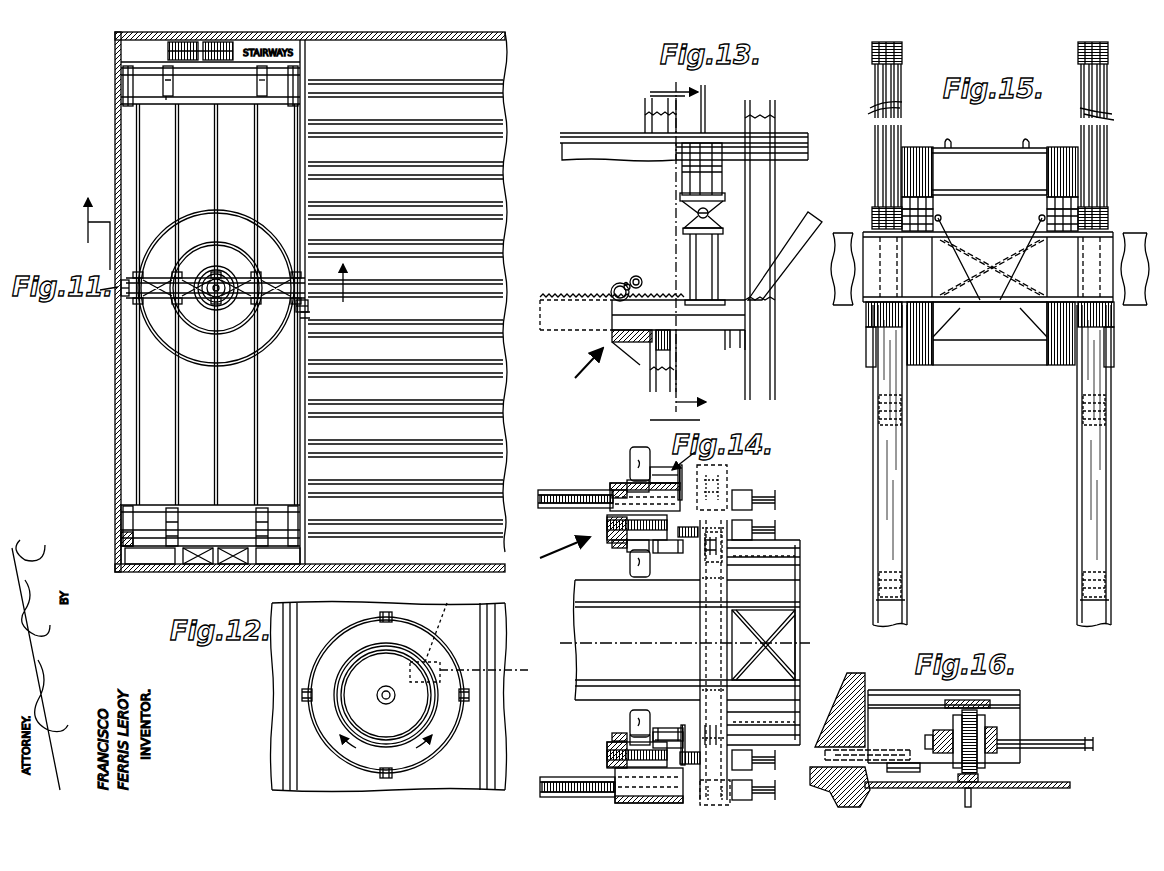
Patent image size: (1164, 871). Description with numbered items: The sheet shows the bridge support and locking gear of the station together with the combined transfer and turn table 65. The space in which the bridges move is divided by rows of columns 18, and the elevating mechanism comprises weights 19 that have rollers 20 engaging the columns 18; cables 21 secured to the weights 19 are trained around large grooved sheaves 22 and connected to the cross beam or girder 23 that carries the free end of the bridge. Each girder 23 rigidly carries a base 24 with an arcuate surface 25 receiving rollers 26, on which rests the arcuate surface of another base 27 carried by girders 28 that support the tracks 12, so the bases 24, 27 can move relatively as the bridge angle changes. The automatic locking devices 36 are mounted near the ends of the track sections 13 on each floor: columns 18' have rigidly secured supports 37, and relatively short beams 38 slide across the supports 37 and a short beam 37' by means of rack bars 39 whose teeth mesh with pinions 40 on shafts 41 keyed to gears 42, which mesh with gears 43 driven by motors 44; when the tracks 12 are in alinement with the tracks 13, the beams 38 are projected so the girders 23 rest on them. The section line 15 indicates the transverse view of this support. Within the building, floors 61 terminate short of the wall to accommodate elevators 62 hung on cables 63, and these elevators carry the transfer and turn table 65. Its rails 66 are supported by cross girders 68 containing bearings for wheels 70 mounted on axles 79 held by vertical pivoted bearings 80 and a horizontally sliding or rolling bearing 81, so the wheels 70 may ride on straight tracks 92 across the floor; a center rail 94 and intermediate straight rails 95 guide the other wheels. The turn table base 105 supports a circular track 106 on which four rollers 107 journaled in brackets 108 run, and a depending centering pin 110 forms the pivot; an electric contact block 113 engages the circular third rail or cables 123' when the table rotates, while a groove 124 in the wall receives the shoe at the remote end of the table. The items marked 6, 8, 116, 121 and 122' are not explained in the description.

In FIG. 11, the elevator shaft enclosure 6 is at (140, 521).
In FIG. 13, the column 8 is at (785, 165).
In FIG. 14, the column 8 is at (778, 562).
In FIG. 15, the column 8 is at (920, 147).
In FIG. 13, the tracks 12 is at (775, 138).
In FIG. 14, the tracks 12 is at (691, 642).
In FIG. 15, the tracks 12 is at (1025, 142).
In FIG. 11, the tracks 13 is at (470, 360).
In FIG. 13, the section line 15 is at (678, 248).
In FIG. 11, the columns 18 is at (216, 258).
In FIG. 14, the columns 18 is at (668, 727).
In FIG. 15, the columns 18 is at (992, 613).
In FIG. 13, the columns 18' is at (712, 247).
In FIG. 14, the columns 18' is at (668, 555).
In FIG. 15, the weights 19 is at (903, 507).
In FIG. 15, the rollers 20 is at (902, 413).
In FIG. 13, the cables 21 is at (706, 116).
In FIG. 14, the cables 21 is at (705, 548).
In FIG. 15, the cables 21 is at (880, 118).
In FIG. 15, the grooved sheaves 22 is at (874, 60).
In FIG. 13, the cross beam or girder 23 is at (716, 280).
In FIG. 14, the cross beam or girder 23 is at (728, 488).
In FIG. 15, the cross beam or girder 23 is at (968, 310).
In FIG. 13, the base 24 is at (690, 231).
In FIG. 15, the base 24 is at (922, 237).
In FIG. 13, the arcuate surface 25 is at (690, 222).
In FIG. 13, the rollers 26 is at (709, 213).
In FIG. 14, the rollers 26 is at (730, 570).
In FIG. 15, the rollers 26 is at (925, 220).
In FIG. 13, the base 27 is at (690, 208).
In FIG. 15, the base 27 is at (920, 200).
In FIG. 13, the girders 28 is at (690, 165).
In FIG. 14, the girders 28 is at (713, 660).
In FIG. 15, the girders 28 is at (995, 180).
In FIG. 13, the automatic locking devices 36 is at (573, 376).
In FIG. 14, the automatic locking devices 36 is at (562, 558).
In FIG. 13, the supports 37 is at (671, 353).
In FIG. 14, the supports 37 is at (754, 645).
In FIG. 15, the supports 37 is at (994, 359).
In FIG. 13, the short beam 37' is at (685, 344).
In FIG. 14, the short beam 37' is at (667, 611).
In FIG. 13, the beams 38 is at (614, 333).
In FIG. 14, the beams 38 is at (572, 488).
In FIG. 15, the beams 38 is at (870, 330).
In FIG. 13, the rack bars 39 is at (600, 296).
In FIG. 14, the rack bars 39 is at (606, 524).
In FIG. 13, the pinions 40 is at (611, 290).
In FIG. 14, the pinions 40 is at (612, 490).
In FIG. 13, the shafts 41 is at (615, 316).
In FIG. 14, the shafts 41 is at (612, 508).
In FIG. 13, the gears 42 is at (624, 285).
In FIG. 14, the gears 42 is at (620, 482).
In FIG. 13, the gears 43 is at (626, 283).
In FIG. 14, the gears 43 is at (645, 468).
In FIG. 13, the motors 44 is at (635, 276).
In FIG. 14, the motors 44 is at (631, 458).
In FIG. 11, the floors 61 is at (132, 414).
In FIG. 12, the floors 61 is at (276, 680).
In FIG. 16, the floors 61 is at (912, 784).
In FIG. 11, the elevators 62 is at (167, 96).
In FIG. 11, the cables 63 is at (176, 96).
In FIG. 11, the combined transfer and turn table 65 is at (118, 300).
In FIG. 11, the rails 66 is at (165, 278).
In FIG. 16, the cross girders 68 is at (983, 708).
In FIG. 16, the wheels 70 is at (975, 712).
In FIG. 16, the axles 79 is at (1030, 743).
In FIG. 16, the vertical pivoted bearings 80 is at (938, 732).
In FIG. 16, the horizontally sliding or rolling bearing 81 is at (997, 732).
In FIG. 11, the straight tracks 92 is at (137, 182).
In FIG. 16, the straight tracks 92 is at (975, 790).
In FIG. 11, the rail 94 is at (216, 186).
In FIG. 11, the straight rails 95 is at (178, 146).
In FIG. 12, the base 105 is at (290, 752).
In FIG. 12, the circular track 106 is at (350, 760).
In FIG. 12, the rollers 107 is at (378, 617).
In FIG. 12, the brackets 108 is at (392, 616).
In FIG. 12, the centering pin 110 is at (396, 697).
In FIG. 12, the electric contact block 113 is at (450, 625).
In FIG. 11, the bracket 116 is at (307, 314).
In FIG. 11, the block 121 is at (308, 298).
In FIG. 16, the shaft 122' is at (872, 750).
In FIG. 12, the circular third rail or cables 123' is at (402, 707).
In FIG. 16, the groove 124 is at (840, 740).